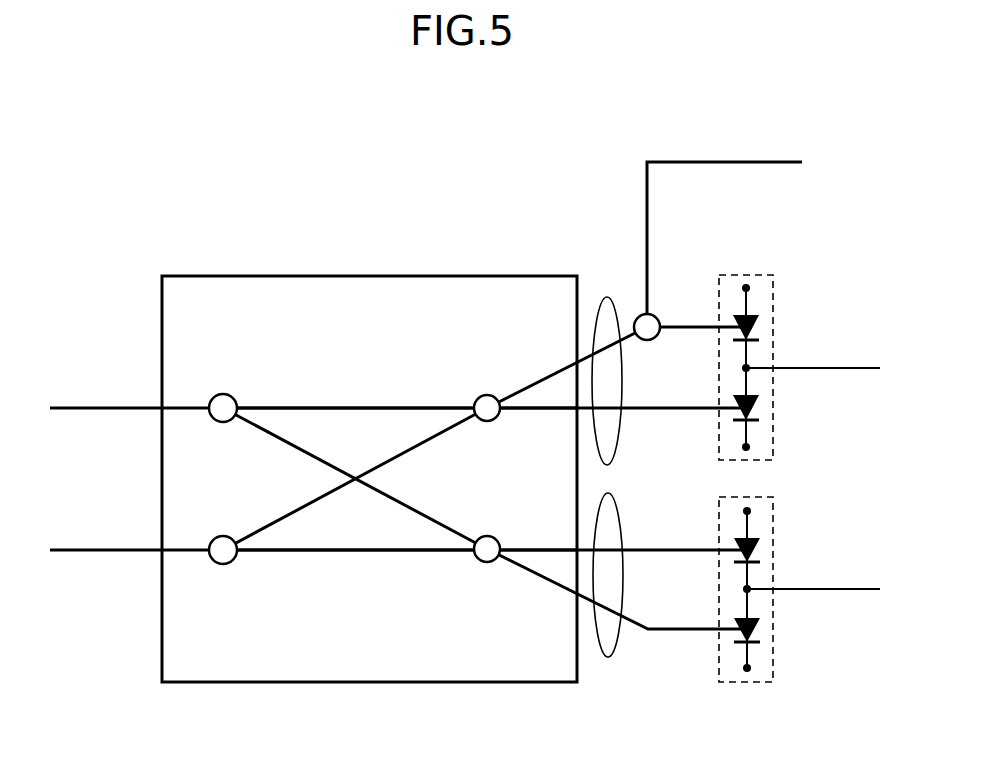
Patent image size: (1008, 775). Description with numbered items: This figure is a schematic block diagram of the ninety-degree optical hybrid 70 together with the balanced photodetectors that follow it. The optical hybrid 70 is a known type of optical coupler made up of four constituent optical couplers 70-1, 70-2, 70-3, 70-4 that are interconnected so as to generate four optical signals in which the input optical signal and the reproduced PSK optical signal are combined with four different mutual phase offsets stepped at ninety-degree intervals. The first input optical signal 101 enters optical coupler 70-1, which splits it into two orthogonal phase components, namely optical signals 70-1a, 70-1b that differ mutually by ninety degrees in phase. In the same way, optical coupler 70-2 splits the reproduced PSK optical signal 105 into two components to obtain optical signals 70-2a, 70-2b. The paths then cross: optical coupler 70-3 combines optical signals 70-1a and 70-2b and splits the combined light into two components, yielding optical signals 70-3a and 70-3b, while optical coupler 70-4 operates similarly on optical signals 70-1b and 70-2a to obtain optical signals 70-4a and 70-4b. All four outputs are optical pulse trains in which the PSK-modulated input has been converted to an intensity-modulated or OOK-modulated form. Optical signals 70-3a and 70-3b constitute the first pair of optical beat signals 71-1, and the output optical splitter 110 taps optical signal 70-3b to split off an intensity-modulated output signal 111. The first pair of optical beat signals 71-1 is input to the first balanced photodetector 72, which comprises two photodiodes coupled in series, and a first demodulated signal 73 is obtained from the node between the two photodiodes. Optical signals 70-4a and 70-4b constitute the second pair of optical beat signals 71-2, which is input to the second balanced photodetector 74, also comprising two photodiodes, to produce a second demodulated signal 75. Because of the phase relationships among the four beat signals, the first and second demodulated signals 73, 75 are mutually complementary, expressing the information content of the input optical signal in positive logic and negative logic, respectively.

The 90° optical hybrid 70 is at (375, 276).
The optical coupler 70-1 is at (224, 394).
The optical signal 70-1a is at (327, 393).
The optical signal 70-1b is at (272, 423).
The optical coupler 70-2 is at (224, 535).
The optical signal 70-2a is at (327, 563).
The optical signal 70-2b is at (273, 533).
The optical coupler 70-3 is at (474, 395).
The optical signal 70-3a is at (562, 422).
The optical signal 70-3b is at (560, 355).
The optical coupler 70-4 is at (472, 535).
The optical signal 70-4a is at (565, 537).
The optical signal 70-4b is at (560, 600).
The first pair of optical beat signals 71-1 is at (607, 297).
The second pair of optical beat signals 71-2 is at (608, 657).
The first balanced photodetector 72 is at (744, 276).
The first demodulated signal 73 is at (857, 355).
The second balanced photodetector 74 is at (740, 684).
The second demodulated signal 75 is at (858, 577).
The first input optical signal 101 is at (132, 393).
The reproduced PSK optical signal 105 is at (132, 537).
The output optical splitter 110 is at (650, 342).
The intensity-modulated output signal 111 is at (635, 200).